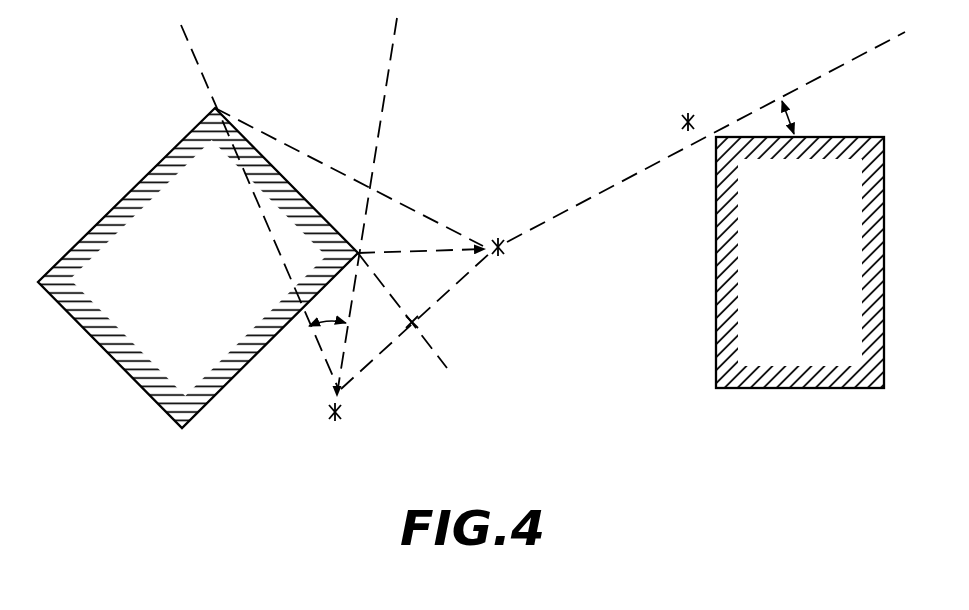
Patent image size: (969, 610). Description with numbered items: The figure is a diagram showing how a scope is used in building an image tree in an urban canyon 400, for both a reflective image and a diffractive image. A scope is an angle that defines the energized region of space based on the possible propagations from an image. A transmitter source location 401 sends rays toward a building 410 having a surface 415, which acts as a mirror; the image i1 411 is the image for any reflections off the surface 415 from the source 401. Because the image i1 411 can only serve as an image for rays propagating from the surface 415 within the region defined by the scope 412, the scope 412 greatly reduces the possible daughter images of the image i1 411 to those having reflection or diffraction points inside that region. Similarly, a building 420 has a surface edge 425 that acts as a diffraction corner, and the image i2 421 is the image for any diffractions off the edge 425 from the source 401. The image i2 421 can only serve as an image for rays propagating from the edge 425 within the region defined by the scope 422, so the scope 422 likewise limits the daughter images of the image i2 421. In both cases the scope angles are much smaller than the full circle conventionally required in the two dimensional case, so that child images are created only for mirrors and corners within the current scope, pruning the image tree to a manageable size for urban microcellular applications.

The urban canyon 400 is at (548, 450).
The transmitter source location 401 is at (498, 258).
The building 410 is at (155, 400).
The image i1 411 is at (332, 424).
The scope 412 is at (314, 292).
The surface 415 is at (304, 186).
The building 420 is at (798, 390).
The image i2 421 is at (676, 114).
The scope 422 is at (796, 116).
The surface edge 425 is at (691, 108).